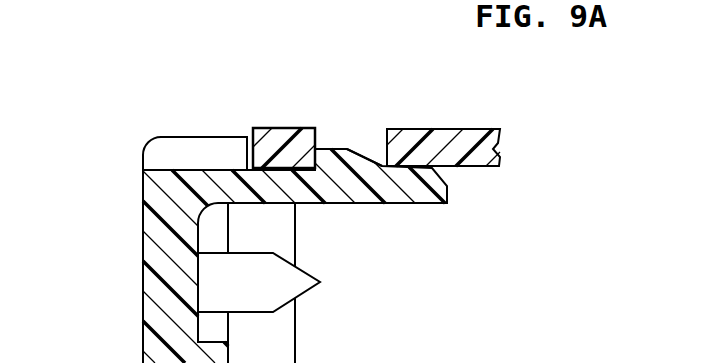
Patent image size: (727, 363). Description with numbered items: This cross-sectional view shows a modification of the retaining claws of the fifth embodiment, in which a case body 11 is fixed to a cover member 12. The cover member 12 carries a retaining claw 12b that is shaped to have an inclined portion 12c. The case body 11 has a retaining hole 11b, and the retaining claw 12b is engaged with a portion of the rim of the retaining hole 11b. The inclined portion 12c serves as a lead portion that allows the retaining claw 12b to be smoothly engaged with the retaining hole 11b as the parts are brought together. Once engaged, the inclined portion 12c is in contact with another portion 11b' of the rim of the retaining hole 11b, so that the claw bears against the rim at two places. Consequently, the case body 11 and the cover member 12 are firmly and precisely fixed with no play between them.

The case body 11 is at (489, 130).
The retaining hole 11b is at (288, 105).
The another portion of the rim of the retaining hole 11b' is at (367, 210).
The cover member 12 is at (153, 228).
The retaining claw 12b is at (330, 150).
The inclined portion 12c is at (362, 156).